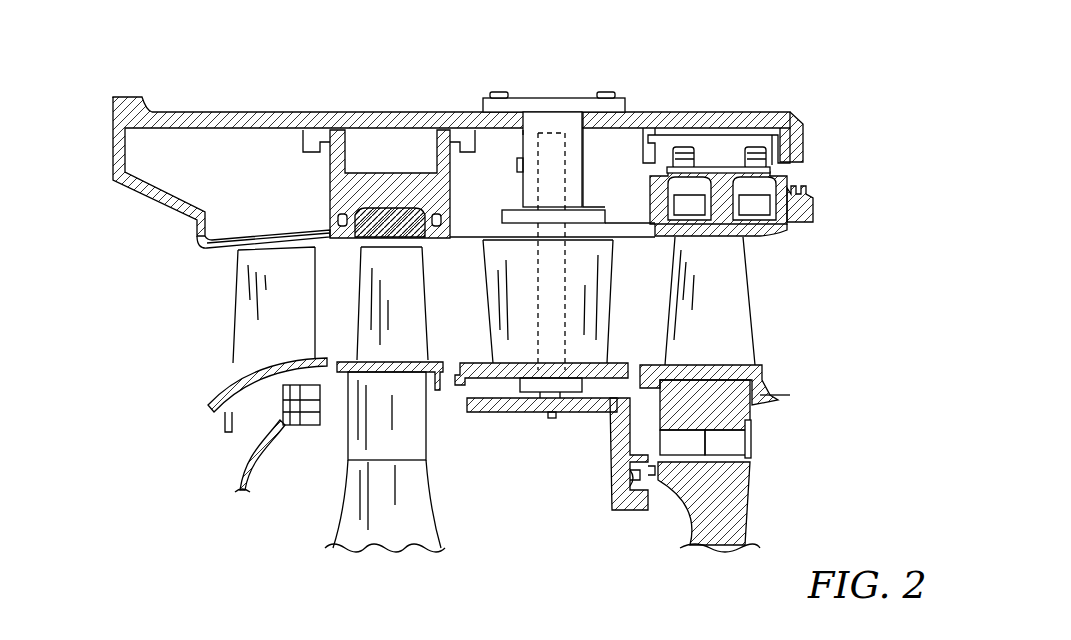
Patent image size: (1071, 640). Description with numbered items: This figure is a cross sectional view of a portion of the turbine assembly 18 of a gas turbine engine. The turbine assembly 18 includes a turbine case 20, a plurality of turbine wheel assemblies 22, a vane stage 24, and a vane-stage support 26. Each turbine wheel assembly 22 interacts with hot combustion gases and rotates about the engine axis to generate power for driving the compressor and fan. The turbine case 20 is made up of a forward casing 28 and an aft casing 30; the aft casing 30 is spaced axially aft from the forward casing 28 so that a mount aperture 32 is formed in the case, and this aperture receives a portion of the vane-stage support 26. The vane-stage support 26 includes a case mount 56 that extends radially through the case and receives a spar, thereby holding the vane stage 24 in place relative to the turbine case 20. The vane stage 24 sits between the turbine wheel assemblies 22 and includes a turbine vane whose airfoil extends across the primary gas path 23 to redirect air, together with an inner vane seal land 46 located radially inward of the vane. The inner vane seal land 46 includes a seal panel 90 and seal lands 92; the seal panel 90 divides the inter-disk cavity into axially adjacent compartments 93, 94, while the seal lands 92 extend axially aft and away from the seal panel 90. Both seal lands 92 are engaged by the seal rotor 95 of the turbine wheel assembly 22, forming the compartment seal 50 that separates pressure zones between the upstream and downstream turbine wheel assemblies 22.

The turbine assembly 18 is at (140, 78).
The turbine case 20 is at (300, 94).
The turbine wheel assembly 22 is at (305, 500).
The primary gas path 23 is at (184, 332).
The vane stage 24 is at (583, 486).
The vane-stage support 26 is at (588, 150).
The forward casing 28 is at (437, 108).
The aft casing 30 is at (718, 108).
The mount aperture 32 is at (520, 135).
The inner vane seal land 46 is at (520, 440).
The compartment seal 50 is at (628, 515).
The case mount 56 is at (555, 95).
The seal panel 90 is at (480, 414).
The seal lands 92 is at (660, 473).
The compartment 93 is at (573, 455).
The compartment 94 is at (638, 420).
The seal rotor 95 is at (660, 500).